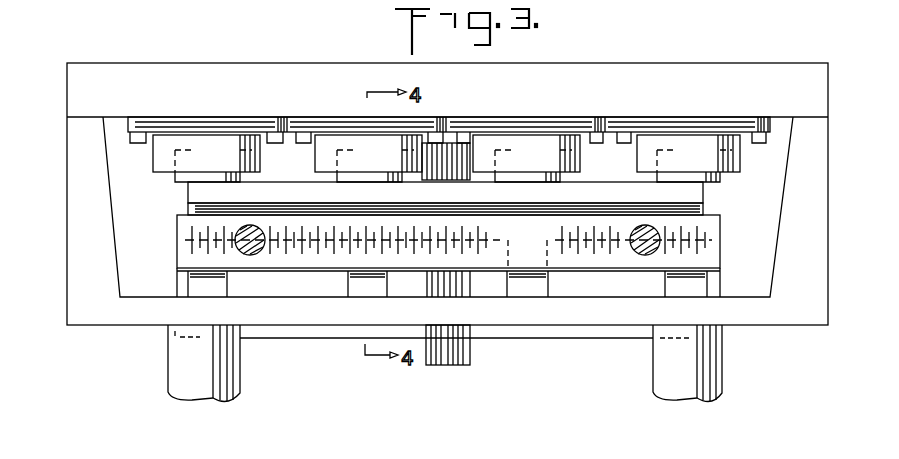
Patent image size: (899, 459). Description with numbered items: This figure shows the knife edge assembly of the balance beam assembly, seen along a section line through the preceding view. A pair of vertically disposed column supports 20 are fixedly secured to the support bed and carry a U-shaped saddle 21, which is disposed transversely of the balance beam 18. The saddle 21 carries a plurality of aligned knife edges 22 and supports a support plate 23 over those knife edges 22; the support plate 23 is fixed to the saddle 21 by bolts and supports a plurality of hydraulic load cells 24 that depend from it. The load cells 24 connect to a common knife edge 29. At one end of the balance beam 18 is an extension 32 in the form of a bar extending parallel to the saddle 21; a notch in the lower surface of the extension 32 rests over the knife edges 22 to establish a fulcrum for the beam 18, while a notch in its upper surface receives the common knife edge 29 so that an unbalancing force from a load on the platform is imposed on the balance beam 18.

The balance beam 18 is at (448, 366).
The column supports 20 is at (186, 370).
The U-shaped saddle 21 is at (822, 220).
The knife edges 22 is at (197, 280).
The support plate 23 is at (826, 92).
The hydraulic load cells 24 is at (222, 165).
The common knife edge 29 is at (188, 196).
The extension 32 is at (180, 225).